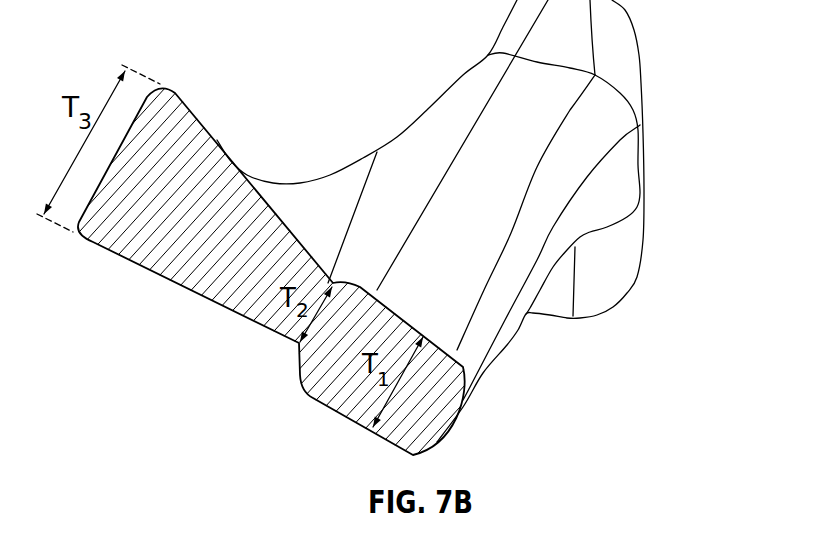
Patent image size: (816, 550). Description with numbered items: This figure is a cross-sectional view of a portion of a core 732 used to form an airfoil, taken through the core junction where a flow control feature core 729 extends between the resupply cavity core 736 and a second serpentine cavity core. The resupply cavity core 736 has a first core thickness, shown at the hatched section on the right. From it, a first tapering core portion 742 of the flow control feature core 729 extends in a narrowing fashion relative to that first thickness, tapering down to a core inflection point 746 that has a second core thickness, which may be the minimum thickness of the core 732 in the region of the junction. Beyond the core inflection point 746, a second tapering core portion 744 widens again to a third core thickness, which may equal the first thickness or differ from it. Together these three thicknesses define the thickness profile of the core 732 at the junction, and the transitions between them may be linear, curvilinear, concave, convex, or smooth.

The flow control feature core 729 is at (318, 197).
The core 732 is at (643, 88).
The resupply cavity core 736 is at (488, 170).
The first tapering core portion 742 is at (410, 147).
The second tapering core portion 744 is at (293, 196).
The core inflection point 746 is at (341, 240).